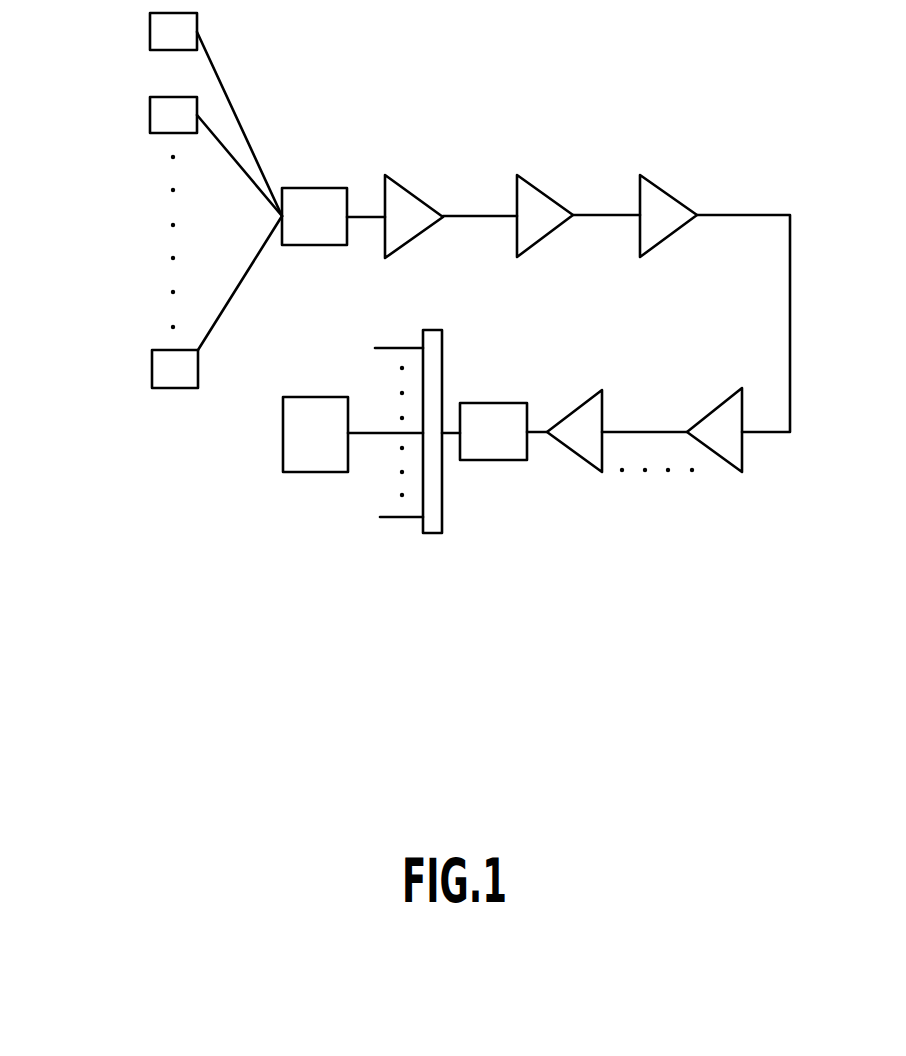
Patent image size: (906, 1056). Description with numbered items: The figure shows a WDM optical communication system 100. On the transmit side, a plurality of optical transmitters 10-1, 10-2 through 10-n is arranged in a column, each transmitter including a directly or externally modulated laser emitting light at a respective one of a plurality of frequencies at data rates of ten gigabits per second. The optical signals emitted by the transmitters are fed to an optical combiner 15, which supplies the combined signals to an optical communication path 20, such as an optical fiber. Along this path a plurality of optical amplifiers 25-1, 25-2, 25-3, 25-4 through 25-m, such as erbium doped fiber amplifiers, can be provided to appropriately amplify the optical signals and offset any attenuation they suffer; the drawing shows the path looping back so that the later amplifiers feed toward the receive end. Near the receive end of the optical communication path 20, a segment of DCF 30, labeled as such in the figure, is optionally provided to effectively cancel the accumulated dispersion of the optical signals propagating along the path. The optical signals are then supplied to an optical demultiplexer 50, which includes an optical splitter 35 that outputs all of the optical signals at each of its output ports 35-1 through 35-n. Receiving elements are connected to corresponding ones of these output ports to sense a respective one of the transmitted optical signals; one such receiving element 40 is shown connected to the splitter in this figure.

The optical communication system 100 is at (176, 561).
The optical transmitter 10-1 is at (150, 30).
The optical transmitter 10-2 is at (150, 114).
The optical transmitter 10-n is at (152, 369).
The optical combiner 15 is at (318, 188).
The optical communication path 20 is at (470, 215).
The optical amplifier 25-1 is at (412, 193).
The optical amplifier 25-2 is at (548, 196).
The optical amplifier 25-3 is at (665, 193).
The optical amplifier 25-4 is at (718, 405).
The optical amplifier 25-m is at (586, 402).
The DCF 30 is at (488, 403).
The optical splitter 35 is at (430, 533).
The output port 35-1 is at (398, 347).
The output port 35-n is at (398, 517).
The receiving element 40 is at (283, 450).
The optical demultiplexer 50 is at (481, 561).